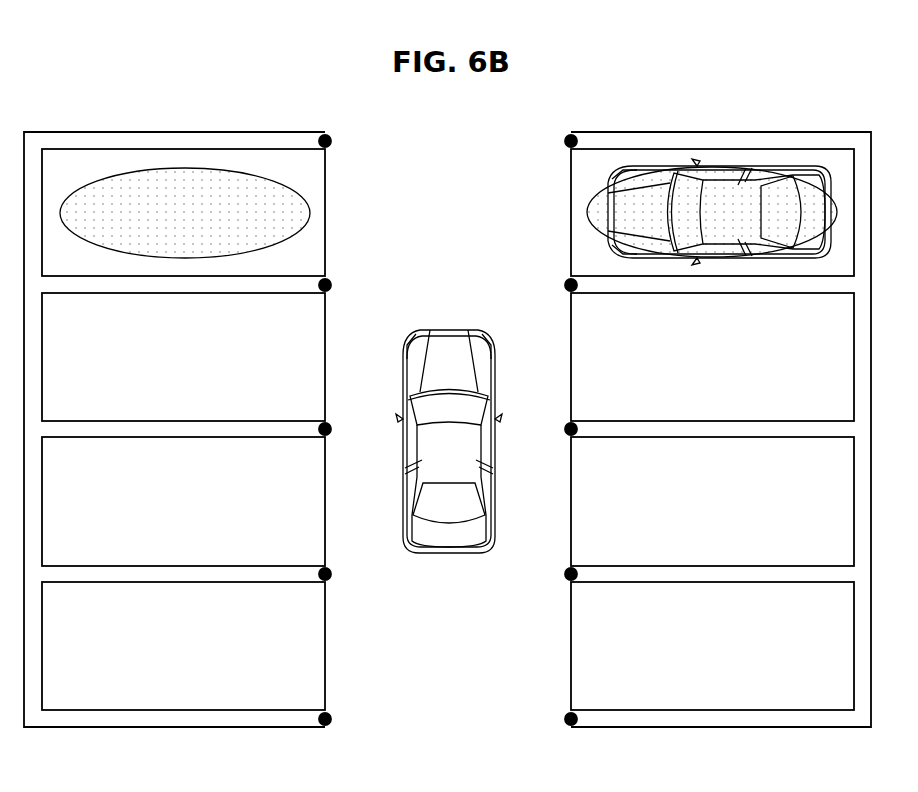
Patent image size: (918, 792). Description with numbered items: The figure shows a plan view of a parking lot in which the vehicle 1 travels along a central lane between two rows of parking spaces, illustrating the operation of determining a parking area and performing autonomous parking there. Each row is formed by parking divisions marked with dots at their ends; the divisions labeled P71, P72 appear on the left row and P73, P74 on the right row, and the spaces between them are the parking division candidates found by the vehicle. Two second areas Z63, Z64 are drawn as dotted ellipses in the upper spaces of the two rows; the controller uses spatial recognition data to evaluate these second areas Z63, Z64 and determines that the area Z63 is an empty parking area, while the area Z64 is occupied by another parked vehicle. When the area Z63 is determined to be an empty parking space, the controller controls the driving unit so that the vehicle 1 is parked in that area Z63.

The parking space P71 is at (331, 141).
The parking space P72 is at (331, 285).
The parking space P73 is at (565, 141).
The parking space P74 is at (565, 285).
The second area Z63 is at (310, 213).
The second area Z64 is at (587, 212).
The vehicle 1 is at (447, 582).